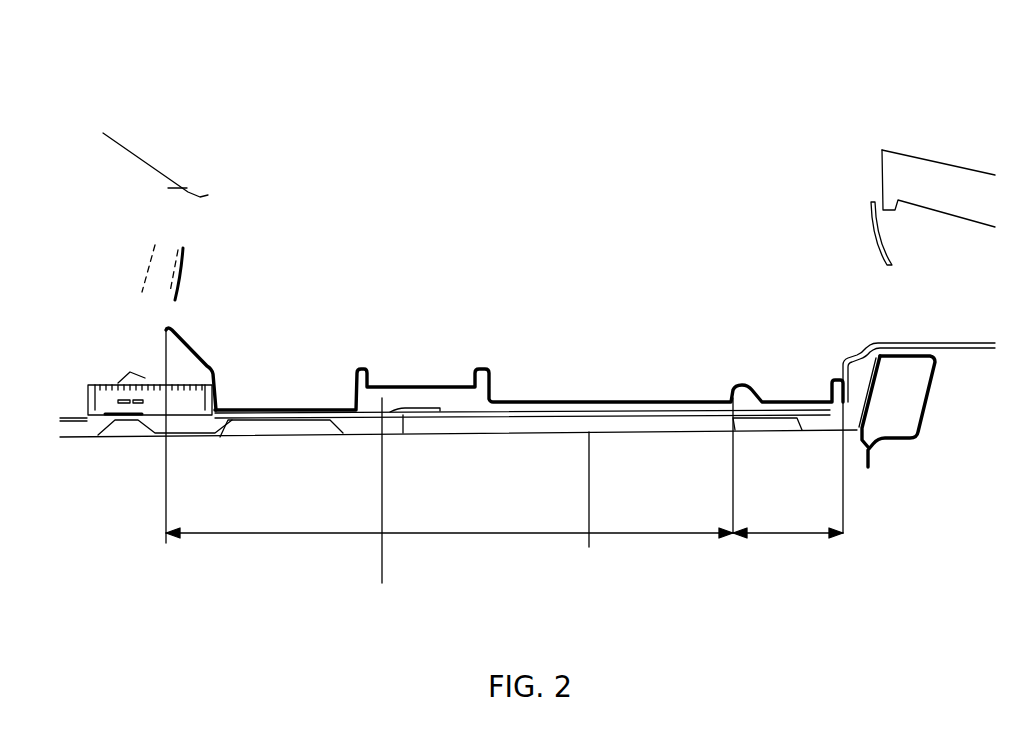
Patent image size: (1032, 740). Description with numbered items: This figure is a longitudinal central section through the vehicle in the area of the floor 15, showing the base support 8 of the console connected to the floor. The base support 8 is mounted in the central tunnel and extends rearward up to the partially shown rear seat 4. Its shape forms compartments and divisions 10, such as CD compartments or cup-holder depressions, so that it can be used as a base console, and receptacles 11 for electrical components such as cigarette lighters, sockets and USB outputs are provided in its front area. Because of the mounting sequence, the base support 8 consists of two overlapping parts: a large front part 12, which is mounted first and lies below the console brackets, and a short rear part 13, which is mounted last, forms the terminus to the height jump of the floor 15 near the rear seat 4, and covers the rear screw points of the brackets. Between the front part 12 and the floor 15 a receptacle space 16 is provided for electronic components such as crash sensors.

The rear seat 4 is at (936, 136).
The base support 8 is at (605, 303).
The compartments and divisions 10 is at (394, 388).
The receptacles 11 is at (187, 338).
The front part 12 is at (433, 348).
The rear part 13 is at (791, 360).
The floor 15 is at (504, 490).
The receptacle space 16 is at (177, 362).